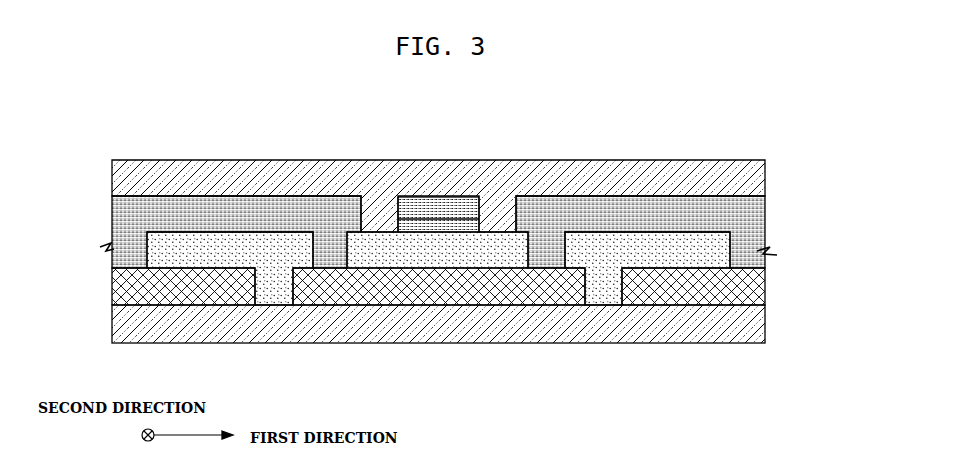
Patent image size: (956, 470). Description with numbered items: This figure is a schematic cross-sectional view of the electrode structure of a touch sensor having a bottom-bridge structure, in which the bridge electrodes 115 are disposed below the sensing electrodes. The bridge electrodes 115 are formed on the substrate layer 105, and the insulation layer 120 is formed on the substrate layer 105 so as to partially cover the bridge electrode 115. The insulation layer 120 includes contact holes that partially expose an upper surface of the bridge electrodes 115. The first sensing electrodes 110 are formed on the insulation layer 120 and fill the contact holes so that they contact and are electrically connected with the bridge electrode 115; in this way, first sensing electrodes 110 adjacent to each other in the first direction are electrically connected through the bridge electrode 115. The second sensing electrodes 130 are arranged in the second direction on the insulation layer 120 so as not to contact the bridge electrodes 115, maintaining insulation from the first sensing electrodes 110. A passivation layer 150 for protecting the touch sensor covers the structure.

The substrate layer 105 is at (765, 323).
The first sensing electrodes 110 is at (246, 215).
The bridge electrode 115 is at (435, 305).
The insulation layer 120 is at (678, 253).
The second sensing electrodes 130 is at (443, 215).
The passivation layer 150 is at (759, 173).